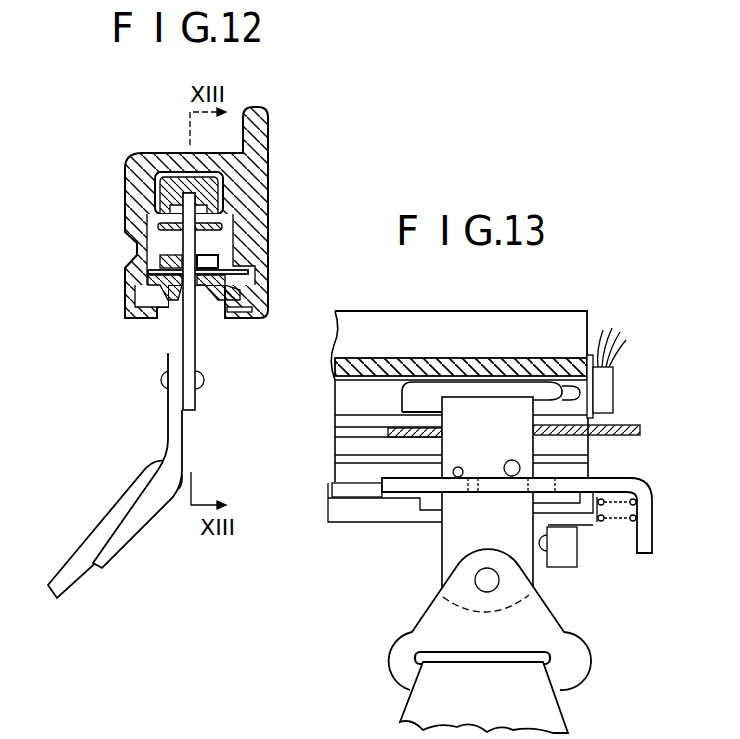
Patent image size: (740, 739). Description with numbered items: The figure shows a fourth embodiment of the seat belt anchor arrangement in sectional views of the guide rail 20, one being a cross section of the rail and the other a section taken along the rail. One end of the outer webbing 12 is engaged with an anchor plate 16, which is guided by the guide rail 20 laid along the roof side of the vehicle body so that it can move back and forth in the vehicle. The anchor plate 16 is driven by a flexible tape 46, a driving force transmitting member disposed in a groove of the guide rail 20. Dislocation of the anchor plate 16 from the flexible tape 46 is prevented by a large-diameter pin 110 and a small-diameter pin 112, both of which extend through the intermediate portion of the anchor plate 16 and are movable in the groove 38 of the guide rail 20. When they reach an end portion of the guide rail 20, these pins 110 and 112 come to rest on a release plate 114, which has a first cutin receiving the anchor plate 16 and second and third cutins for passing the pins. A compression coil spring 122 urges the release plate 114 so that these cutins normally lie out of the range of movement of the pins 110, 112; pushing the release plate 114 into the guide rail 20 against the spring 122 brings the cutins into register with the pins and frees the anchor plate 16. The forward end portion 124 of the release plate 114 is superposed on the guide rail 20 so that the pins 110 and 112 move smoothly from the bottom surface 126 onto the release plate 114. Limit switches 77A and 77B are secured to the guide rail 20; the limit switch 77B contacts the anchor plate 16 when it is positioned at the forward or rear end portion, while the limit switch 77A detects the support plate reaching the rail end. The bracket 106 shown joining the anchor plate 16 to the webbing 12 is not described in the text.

In FIG. 12, the outer webbing 12 is at (73, 557).
In FIG. 13, the outer webbing 12 is at (560, 708).
In FIG. 12, the anchor plate 16 is at (197, 354).
In FIG. 13, the anchor plate 16 is at (445, 555).
In FIG. 12, the guide rail 20 is at (125, 207).
In FIG. 13, the guide rail 20 is at (463, 358).
In FIG. 12, the anchor groove 38 is at (153, 271).
In FIG. 13, the anchor groove 38 is at (575, 466).
In FIG. 12, the flexible tape 46 is at (158, 228).
In FIG. 13, the flexible tape 46 is at (620, 425).
In FIG. 13, the limit switch 77A is at (606, 385).
In FIG. 13, the limit switch 77B is at (562, 568).
In FIG. 12, the bracket 106 is at (167, 426).
In FIG. 13, the bracket 106 is at (568, 645).
In FIG. 12, the large-diameter pin 110 is at (222, 265).
In FIG. 13, the large-diameter pin 110 is at (512, 460).
In FIG. 13, the small-diameter pin 112 is at (459, 466).
In FIG. 12, the release plate 114 is at (177, 300).
In FIG. 13, the release plate 114 is at (642, 478).
In FIG. 13, the compression coil spring 122 is at (628, 522).
In FIG. 13, the forward end portion 124 is at (392, 480).
In FIG. 13, the bottom surface 126 is at (332, 500).